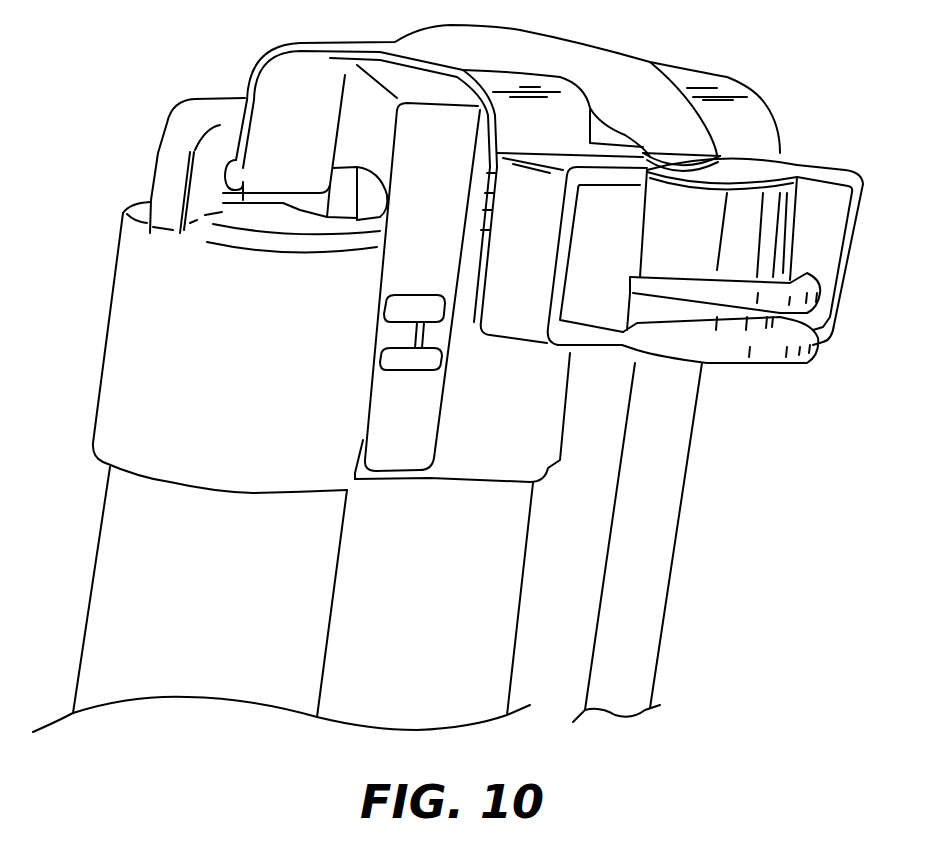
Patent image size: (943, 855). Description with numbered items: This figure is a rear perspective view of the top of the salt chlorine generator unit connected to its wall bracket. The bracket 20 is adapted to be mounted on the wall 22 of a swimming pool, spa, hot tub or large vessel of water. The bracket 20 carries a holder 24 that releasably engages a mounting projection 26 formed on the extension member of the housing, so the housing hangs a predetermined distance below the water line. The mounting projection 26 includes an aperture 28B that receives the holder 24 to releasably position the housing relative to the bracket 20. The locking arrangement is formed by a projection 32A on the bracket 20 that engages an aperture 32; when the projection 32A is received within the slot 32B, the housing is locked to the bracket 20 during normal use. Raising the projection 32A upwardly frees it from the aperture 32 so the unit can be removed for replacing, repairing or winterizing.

The bracket 20 is at (62, 360).
The wall 22 is at (637, 517).
The holder 24 is at (243, 200).
The mounting projection 26 is at (180, 130).
The aperture 28B is at (263, 200).
The aperture 32 is at (357, 359).
The projection 32A is at (393, 360).
The slot 32B is at (405, 333).